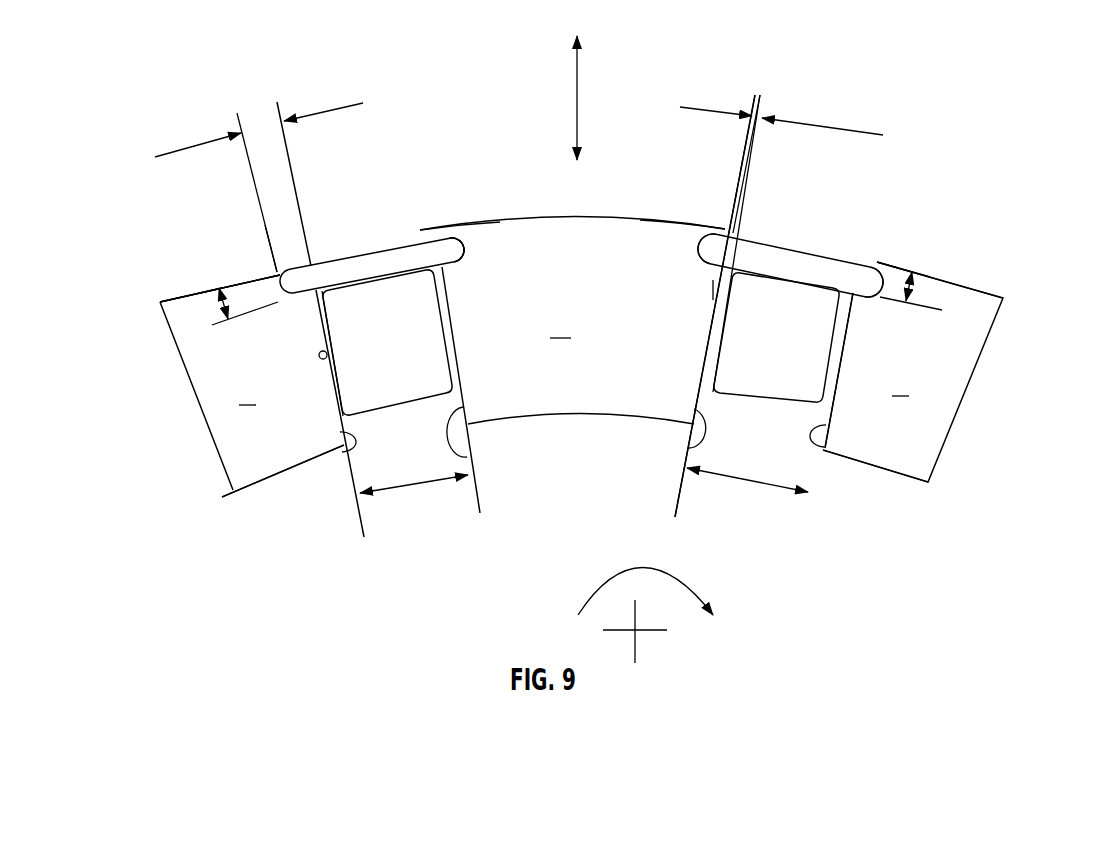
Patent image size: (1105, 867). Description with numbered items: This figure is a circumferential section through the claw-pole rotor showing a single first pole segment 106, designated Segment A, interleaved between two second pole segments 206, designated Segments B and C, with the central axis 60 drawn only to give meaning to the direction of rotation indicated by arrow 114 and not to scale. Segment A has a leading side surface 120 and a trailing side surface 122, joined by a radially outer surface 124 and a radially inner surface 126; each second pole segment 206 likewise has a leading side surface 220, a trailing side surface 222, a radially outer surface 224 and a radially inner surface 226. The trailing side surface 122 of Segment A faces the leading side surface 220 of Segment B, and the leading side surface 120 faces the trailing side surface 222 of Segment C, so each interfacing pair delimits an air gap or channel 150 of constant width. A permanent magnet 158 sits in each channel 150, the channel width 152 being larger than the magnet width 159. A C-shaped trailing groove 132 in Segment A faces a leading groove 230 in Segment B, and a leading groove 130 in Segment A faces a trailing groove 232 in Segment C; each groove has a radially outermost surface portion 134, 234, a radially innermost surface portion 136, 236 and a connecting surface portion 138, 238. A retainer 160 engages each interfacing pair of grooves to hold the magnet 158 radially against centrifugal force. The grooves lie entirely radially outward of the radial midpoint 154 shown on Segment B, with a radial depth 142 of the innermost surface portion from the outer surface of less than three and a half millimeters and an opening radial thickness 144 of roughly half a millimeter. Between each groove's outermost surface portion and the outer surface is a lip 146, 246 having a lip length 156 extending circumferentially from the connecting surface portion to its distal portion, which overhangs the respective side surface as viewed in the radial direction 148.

The central axis 60 is at (640, 640).
The first pole segment 106 is at (587, 326).
The arrow indicating direction of rotation 114 is at (597, 585).
The leading side surface 120 is at (692, 445).
The trailing side surface 122 is at (462, 455).
The radially outer surface 124 is at (550, 217).
The radially inner surface 126 is at (569, 421).
The leading groove 130 is at (671, 268).
The trailing groove 132 is at (473, 242).
The radially outermost surface portion 134 is at (733, 233).
The radially innermost surface portion 136 is at (717, 267).
The connecting surface portion 138 is at (697, 248).
The radial depth 142 is at (222, 285).
The radial thickness of groove opening 144 is at (913, 288).
The lip 146 is at (430, 230).
The radial direction 148 is at (573, 98).
The channel 150 is at (382, 442).
The channel width 152 is at (770, 490).
The radial midpoint 154 is at (320, 358).
The lip length 156 is at (190, 146).
The permanent magnet 158 is at (455, 357).
The magnet width 159 is at (422, 487).
The retainer 160 is at (383, 240).
The second pole segment 206 is at (143, 268).
The leading side surface 220 is at (344, 451).
The trailing side surface 222 is at (827, 452).
The radially outer surface 224 is at (172, 291).
The radially inner surface 226 is at (255, 487).
The leading groove 230 is at (258, 283).
The trailing groove 232 is at (877, 309).
The radially outermost surface portion 234 is at (290, 258).
The radially innermost surface portion 236 is at (298, 293).
The connecting surface portion 238 is at (245, 327).
The lip 246 is at (313, 262).